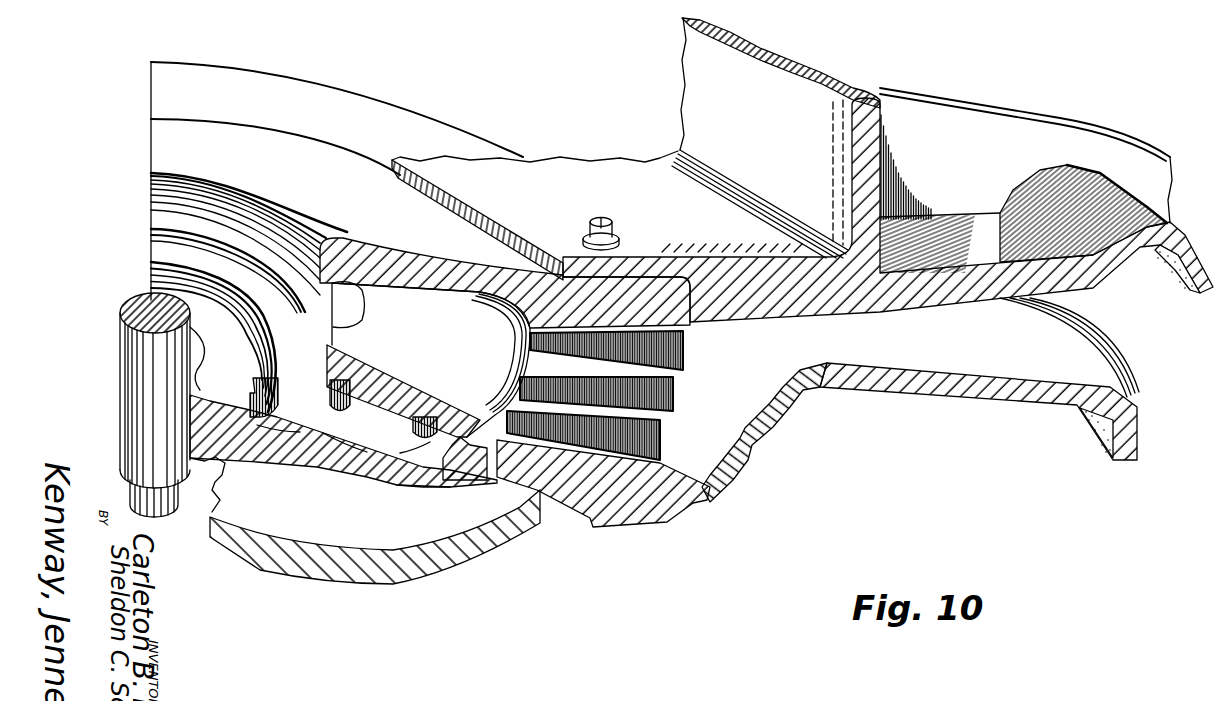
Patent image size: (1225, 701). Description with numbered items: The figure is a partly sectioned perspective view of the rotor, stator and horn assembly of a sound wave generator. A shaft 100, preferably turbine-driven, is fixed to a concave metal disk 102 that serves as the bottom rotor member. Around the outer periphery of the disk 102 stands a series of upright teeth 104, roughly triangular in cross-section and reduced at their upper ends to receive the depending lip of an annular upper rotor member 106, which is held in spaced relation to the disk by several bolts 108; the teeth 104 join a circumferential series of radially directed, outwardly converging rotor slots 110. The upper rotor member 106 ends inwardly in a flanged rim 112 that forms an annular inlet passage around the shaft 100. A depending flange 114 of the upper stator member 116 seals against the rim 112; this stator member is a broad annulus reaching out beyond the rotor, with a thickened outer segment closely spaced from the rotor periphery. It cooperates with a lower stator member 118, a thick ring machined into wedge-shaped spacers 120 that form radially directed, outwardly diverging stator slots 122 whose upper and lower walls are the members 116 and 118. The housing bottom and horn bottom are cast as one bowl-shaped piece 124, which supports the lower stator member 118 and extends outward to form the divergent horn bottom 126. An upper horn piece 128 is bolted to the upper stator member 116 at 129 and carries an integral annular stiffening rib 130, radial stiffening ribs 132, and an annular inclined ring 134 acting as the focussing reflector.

The shaft 100 is at (140, 386).
The concave metal disk 102 is at (300, 455).
The upright teeth 104 is at (412, 468).
The annular upper rotor member 106 is at (410, 395).
The bolts 108 is at (333, 400).
The rotor slots 110 is at (497, 450).
The flanged rim 112 is at (356, 311).
The depending flange 114 is at (307, 293).
The upper stator member 116 is at (473, 287).
The lower stator member 118 is at (620, 490).
The wedge-shaped spacers 120 is at (672, 390).
The stator slots 122 is at (648, 420).
The bowl-shaped piece 124 is at (367, 567).
The horn bottom 126 is at (1002, 392).
The upper horn piece 128 is at (968, 290).
The bolt 129 is at (612, 219).
The annular stiffening rib 130 is at (866, 133).
The radial stiffening ribs 132 is at (1023, 118).
The annular inclined ring 134 is at (1190, 287).